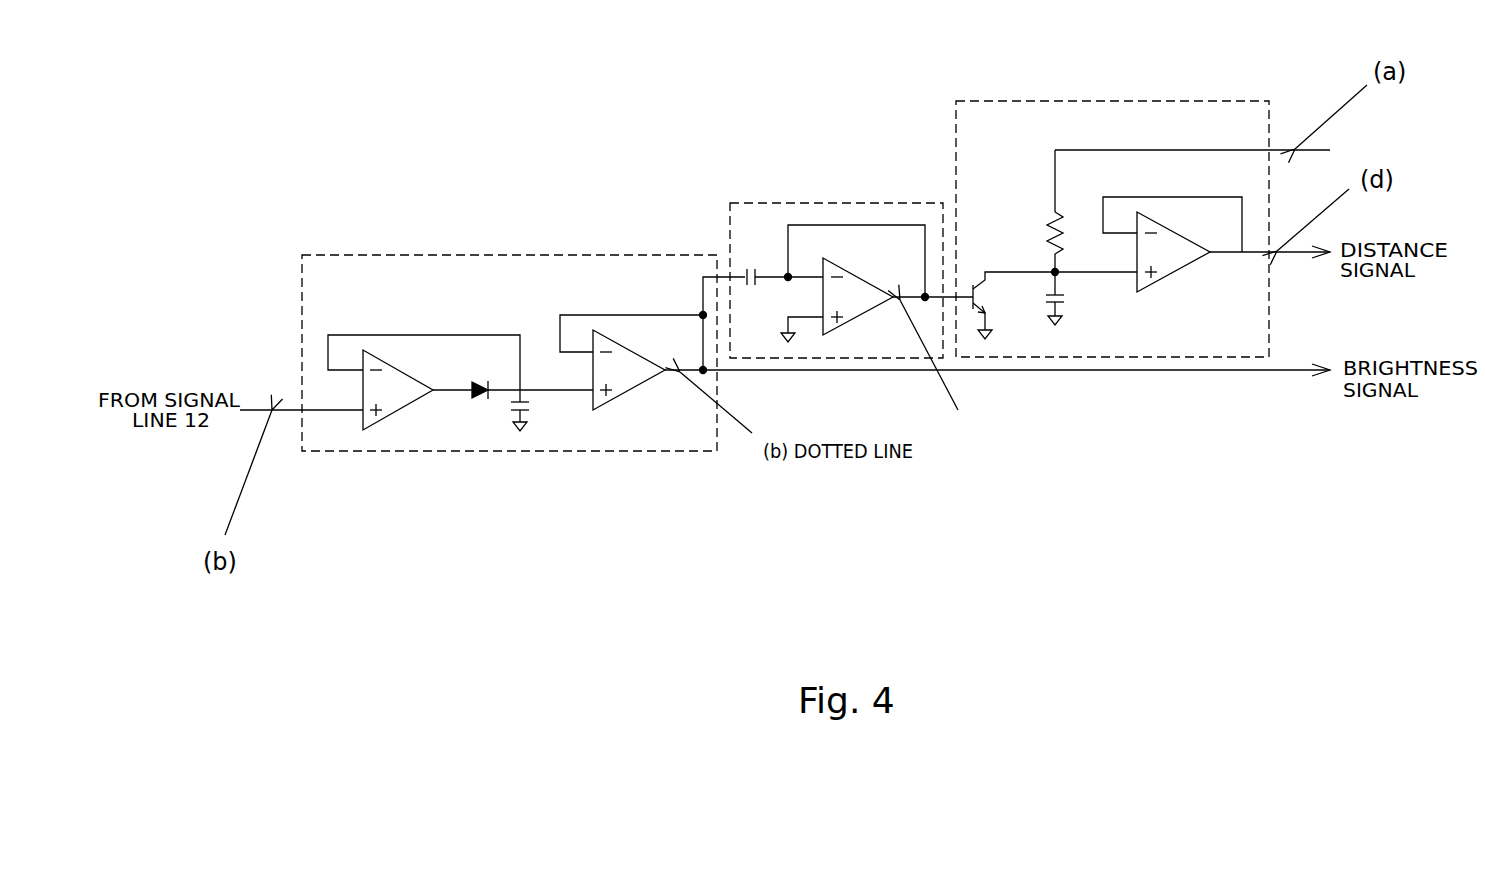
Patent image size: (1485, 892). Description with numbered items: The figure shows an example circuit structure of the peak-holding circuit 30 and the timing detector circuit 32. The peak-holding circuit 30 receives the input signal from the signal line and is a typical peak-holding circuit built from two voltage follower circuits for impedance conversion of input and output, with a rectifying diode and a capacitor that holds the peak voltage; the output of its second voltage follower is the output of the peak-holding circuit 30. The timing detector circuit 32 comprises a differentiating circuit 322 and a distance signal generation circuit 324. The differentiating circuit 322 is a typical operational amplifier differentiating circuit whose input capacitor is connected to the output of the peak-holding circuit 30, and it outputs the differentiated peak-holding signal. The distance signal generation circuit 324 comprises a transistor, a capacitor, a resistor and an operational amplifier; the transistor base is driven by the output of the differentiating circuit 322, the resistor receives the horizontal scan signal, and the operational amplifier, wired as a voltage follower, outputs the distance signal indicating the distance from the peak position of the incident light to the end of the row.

The peak-holding circuit 30 is at (386, 255).
The timing detector circuit 32 is at (1280, 480).
The differentiating circuit 322 is at (795, 203).
The distance signal generation circuit 324 is at (1137, 101).